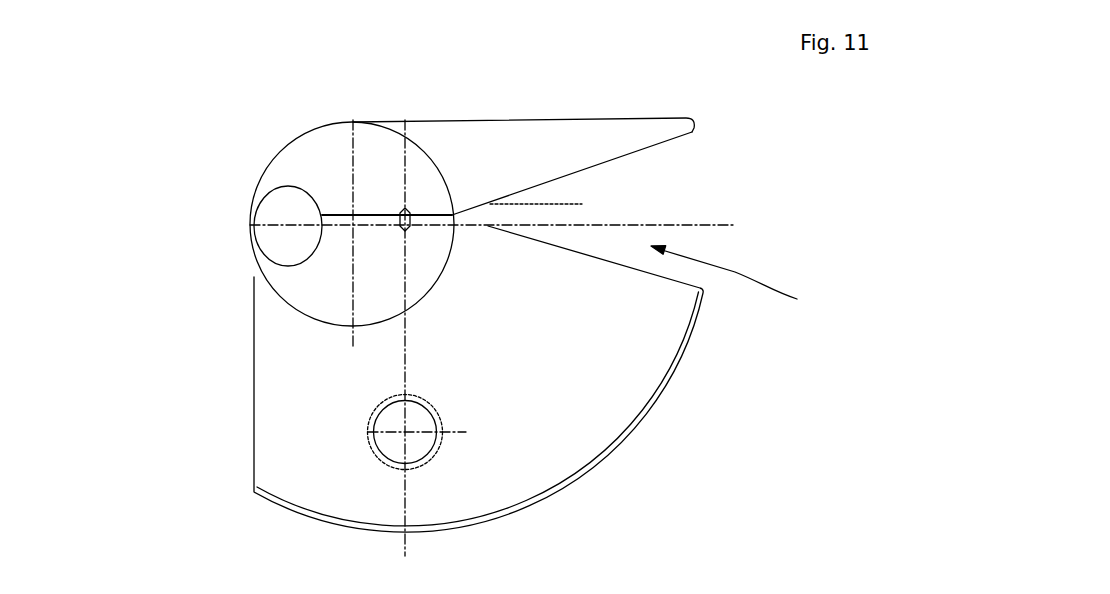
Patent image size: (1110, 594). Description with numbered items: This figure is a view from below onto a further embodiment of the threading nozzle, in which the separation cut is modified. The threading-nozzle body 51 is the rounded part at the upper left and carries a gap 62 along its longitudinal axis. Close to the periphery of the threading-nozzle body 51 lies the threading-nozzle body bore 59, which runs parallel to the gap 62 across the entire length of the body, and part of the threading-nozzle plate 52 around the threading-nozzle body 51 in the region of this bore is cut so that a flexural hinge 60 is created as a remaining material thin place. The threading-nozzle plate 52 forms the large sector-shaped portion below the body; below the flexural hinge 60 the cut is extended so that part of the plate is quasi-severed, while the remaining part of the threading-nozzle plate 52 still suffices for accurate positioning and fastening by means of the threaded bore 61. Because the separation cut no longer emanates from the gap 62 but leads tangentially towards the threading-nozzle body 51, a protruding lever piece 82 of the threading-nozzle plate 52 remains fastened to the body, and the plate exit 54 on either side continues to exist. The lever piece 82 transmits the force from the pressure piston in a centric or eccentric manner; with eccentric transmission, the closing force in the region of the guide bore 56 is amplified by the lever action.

The threading-nozzle body 51 is at (331, 154).
The threading-nozzle plate 52 is at (330, 358).
The plate exit 54 is at (752, 281).
The guide bore 56 is at (407, 224).
The threading-nozzle body bore 59 is at (292, 252).
The flexural hinge 60 is at (252, 228).
The threaded bore 61 is at (375, 423).
The gap 62 is at (447, 217).
The lever piece 82 is at (477, 138).